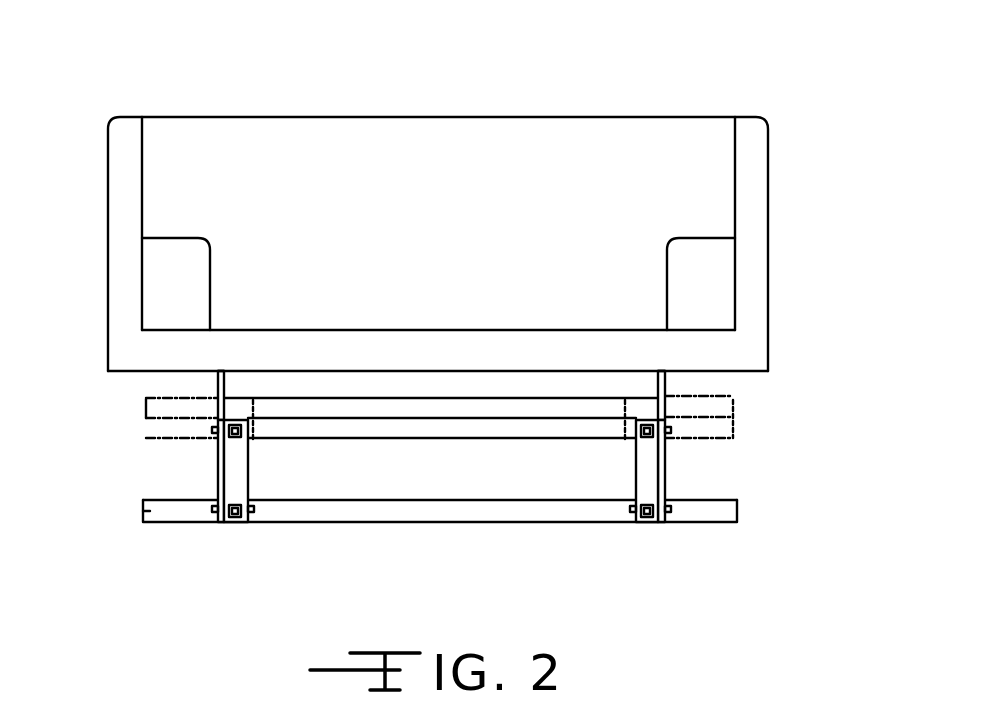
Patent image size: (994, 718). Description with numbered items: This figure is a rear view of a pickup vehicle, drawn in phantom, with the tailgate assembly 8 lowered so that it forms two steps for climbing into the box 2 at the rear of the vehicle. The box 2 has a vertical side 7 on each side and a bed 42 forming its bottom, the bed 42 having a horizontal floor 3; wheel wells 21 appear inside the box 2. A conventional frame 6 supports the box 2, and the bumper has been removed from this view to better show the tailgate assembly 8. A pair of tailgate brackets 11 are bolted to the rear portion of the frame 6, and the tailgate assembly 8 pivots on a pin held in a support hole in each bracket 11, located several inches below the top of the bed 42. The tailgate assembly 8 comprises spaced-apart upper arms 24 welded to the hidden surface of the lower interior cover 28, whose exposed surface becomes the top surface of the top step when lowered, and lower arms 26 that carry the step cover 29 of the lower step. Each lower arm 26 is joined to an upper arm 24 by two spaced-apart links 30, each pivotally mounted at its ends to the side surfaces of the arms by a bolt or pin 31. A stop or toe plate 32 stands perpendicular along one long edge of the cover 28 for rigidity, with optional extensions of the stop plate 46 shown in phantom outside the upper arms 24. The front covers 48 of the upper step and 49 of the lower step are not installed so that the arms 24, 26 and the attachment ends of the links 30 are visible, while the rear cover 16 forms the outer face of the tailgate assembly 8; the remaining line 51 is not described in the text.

The box 2 is at (467, 196).
The horizontal floor 3 is at (383, 328).
The frame 6 is at (215, 385).
The vertical side 7 is at (128, 197).
The tailgate assembly 8 is at (475, 430).
The tailgate bracket 11 is at (225, 387).
The rear cover 16 is at (518, 522).
The wheel well 21 is at (168, 272).
The upper arm 24 is at (248, 440).
The lower arm 26 is at (246, 518).
The lower interior cover 28 is at (452, 418).
The step cover 29 is at (430, 498).
The link 30 is at (215, 478).
The bolt or pin 31 is at (215, 427).
The stop or toe plate 32 is at (543, 418).
The bed 42 is at (603, 345).
The extension of the stop plate 46 is at (158, 409).
The front cover of the upper step 48 is at (415, 428).
The front cover of the lower step 49 is at (413, 507).
The phantom lower line 51 is at (155, 433).